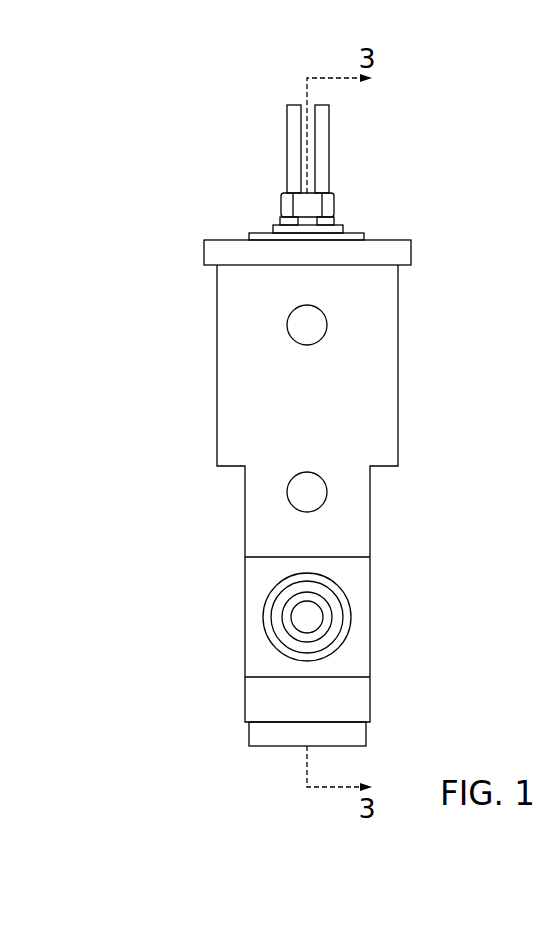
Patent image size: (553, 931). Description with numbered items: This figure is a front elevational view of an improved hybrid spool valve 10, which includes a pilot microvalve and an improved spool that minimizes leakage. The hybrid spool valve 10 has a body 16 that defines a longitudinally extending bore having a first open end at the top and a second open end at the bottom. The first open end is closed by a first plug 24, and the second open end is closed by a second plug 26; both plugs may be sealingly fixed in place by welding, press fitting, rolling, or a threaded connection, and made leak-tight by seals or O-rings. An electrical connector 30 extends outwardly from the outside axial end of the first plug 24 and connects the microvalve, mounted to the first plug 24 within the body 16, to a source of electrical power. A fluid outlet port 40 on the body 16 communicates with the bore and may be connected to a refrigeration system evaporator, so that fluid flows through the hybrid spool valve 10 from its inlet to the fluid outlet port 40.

The hybrid spool valve 10 is at (157, 150).
The body 16 is at (228, 312).
The first plug 24 is at (215, 252).
The electrical connector 30 is at (292, 205).
The fluid outlet port 40 is at (307, 602).
The second plug 26 is at (258, 733).